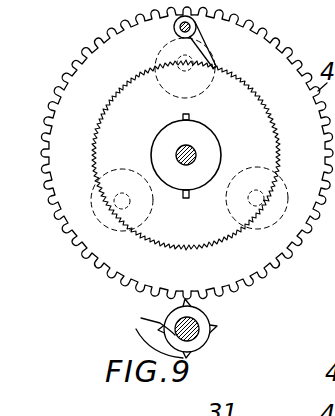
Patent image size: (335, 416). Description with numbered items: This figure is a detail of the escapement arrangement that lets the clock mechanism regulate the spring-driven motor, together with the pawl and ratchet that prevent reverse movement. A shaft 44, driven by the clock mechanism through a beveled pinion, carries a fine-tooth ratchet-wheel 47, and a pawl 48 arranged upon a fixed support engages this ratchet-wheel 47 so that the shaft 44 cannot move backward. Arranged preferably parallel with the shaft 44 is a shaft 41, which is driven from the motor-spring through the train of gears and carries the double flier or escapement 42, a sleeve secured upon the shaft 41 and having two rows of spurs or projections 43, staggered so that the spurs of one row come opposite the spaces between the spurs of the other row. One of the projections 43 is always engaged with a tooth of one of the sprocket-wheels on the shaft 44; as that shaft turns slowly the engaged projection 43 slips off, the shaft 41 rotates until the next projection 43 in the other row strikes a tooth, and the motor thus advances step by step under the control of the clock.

The shaft 41 is at (197, 333).
The double flier or escapement 42 is at (200, 320).
The spurs or projections 43 is at (178, 305).
The shaft 44 is at (192, 150).
The fine-tooth ratchet-wheel 47 is at (186, 155).
The pawl 48 is at (197, 32).